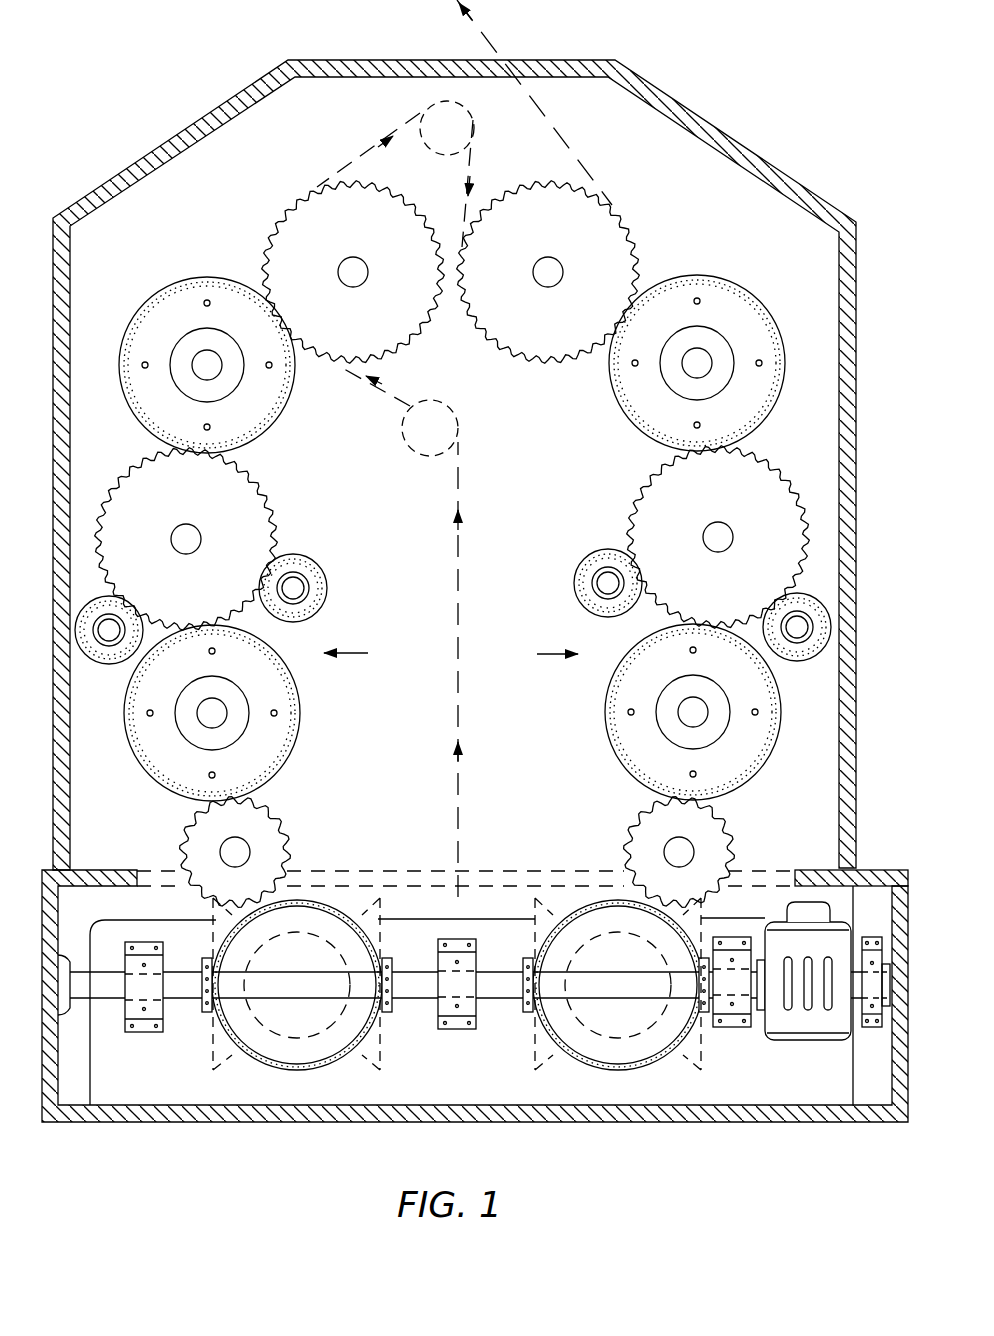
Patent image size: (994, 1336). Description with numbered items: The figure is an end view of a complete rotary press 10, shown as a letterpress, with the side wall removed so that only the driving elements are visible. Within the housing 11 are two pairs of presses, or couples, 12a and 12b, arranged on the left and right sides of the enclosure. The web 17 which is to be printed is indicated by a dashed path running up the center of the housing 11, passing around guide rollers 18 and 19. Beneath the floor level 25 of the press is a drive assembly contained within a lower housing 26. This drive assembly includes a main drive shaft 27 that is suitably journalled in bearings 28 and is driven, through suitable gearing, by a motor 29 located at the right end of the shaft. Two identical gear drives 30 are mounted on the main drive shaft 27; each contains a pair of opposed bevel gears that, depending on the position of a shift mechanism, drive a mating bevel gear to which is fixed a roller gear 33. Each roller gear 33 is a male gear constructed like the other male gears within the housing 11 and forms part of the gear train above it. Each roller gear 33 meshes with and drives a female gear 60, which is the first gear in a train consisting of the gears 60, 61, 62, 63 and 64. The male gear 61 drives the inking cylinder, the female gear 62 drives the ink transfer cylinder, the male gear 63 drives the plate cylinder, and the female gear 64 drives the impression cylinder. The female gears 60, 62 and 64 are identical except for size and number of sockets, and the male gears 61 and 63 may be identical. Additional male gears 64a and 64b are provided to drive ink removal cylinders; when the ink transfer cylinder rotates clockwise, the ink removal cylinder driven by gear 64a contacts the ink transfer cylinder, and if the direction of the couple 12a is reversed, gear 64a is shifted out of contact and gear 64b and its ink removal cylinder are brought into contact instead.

The rotary press 10 is at (766, 118).
The housing 11 is at (859, 553).
The press couple 12a is at (369, 654).
The press couple 12b is at (531, 655).
The web 17 is at (461, 588).
The guide roller 18 is at (456, 424).
The guide roller 19 is at (470, 136).
The floor level 25 is at (878, 868).
The housing 26 is at (742, 1124).
The main drive shaft 27 is at (498, 982).
The bearings 28 is at (143, 1033).
The motor 29 is at (825, 1022).
The gear drive 30 is at (352, 1072).
The roller gear 33 is at (338, 902).
The female gear 60 is at (283, 868).
The male gear 61 is at (265, 772).
The female gear 62 is at (222, 594).
The male gear 63 is at (265, 415).
The female gear 64 is at (370, 328).
The male gear 64a is at (320, 573).
The male gear 64b is at (88, 654).